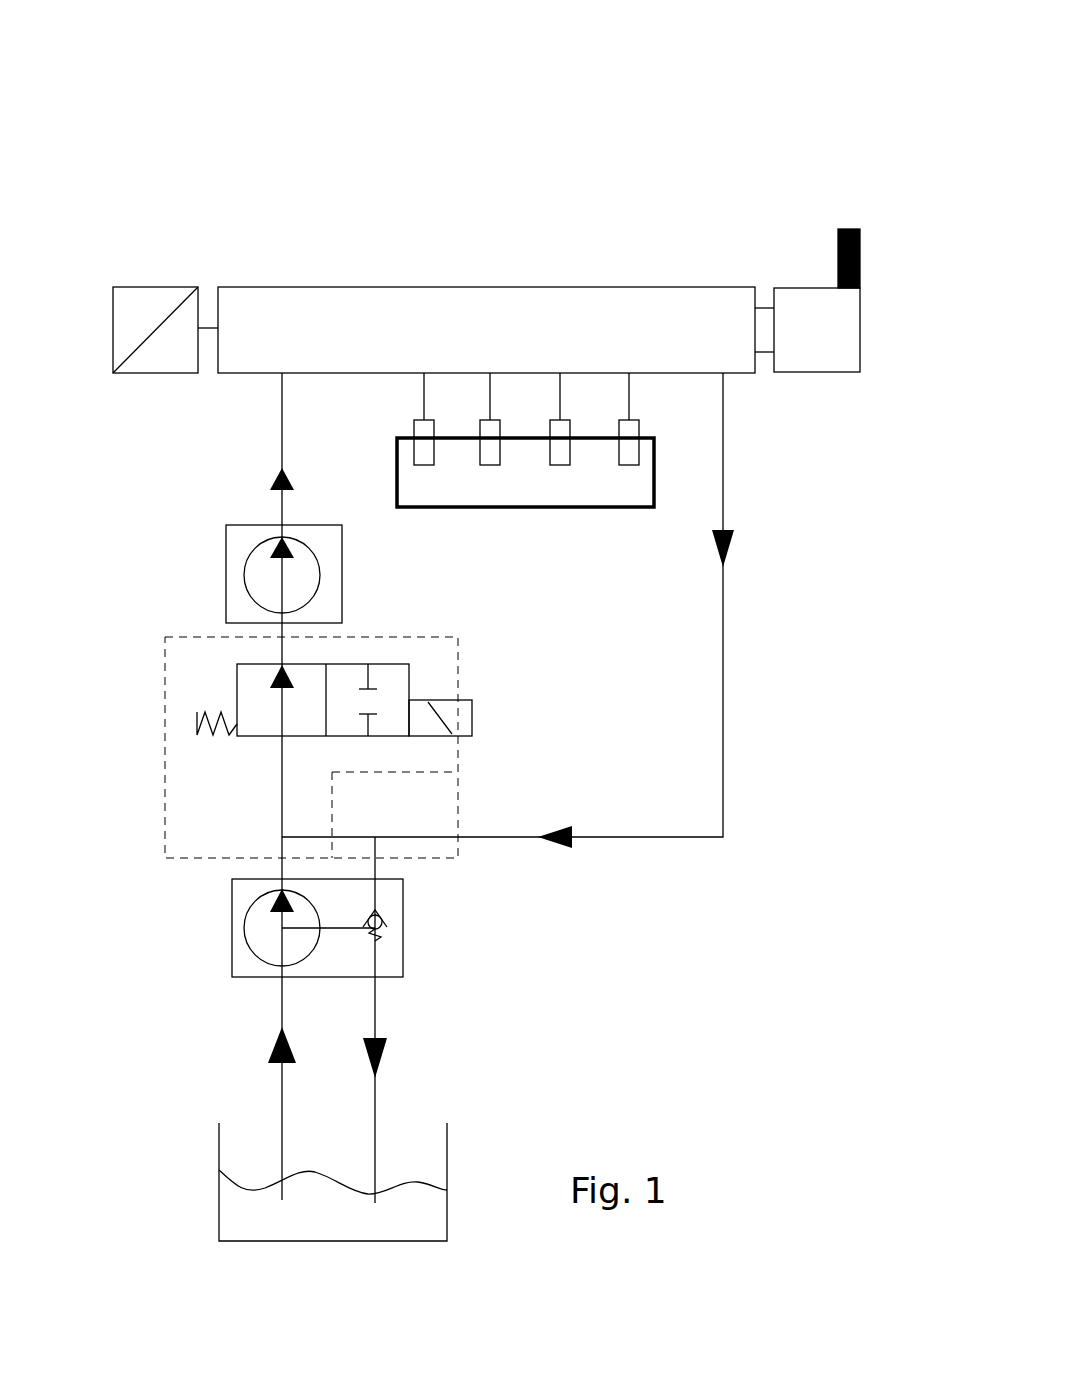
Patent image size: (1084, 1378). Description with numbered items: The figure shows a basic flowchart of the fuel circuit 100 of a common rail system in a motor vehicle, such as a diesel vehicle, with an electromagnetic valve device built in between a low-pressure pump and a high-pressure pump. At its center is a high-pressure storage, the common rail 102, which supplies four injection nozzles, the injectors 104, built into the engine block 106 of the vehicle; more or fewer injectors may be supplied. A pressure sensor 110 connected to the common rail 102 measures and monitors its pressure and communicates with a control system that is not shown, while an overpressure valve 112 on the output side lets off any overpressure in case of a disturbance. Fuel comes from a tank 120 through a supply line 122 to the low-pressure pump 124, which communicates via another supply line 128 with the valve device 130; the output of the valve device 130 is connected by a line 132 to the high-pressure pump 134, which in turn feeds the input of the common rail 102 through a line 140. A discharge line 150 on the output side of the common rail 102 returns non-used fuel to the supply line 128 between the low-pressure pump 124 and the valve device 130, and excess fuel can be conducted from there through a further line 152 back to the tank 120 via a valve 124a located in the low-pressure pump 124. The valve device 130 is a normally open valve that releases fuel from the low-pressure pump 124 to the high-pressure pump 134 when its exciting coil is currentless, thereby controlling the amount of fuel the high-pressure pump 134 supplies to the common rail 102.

The fuel system 100 is at (650, 123).
The common rail 102 is at (497, 300).
The injectors 104 is at (629, 432).
The engine block 106 is at (609, 480).
The pressure sensor 110 is at (148, 357).
The overpressure valve 112 is at (833, 328).
The tank 120 is at (331, 1218).
The supply line 122 is at (282, 997).
The low-pressure pump 124 is at (255, 888).
The valve 124a is at (390, 942).
The supply line 128 is at (282, 747).
The valve device 130 is at (415, 738).
The line 132 is at (280, 630).
The high-pressure pump 134 is at (250, 536).
The line 140 is at (282, 413).
The discharge line 150 is at (533, 610).
The line 152 is at (404, 1020).